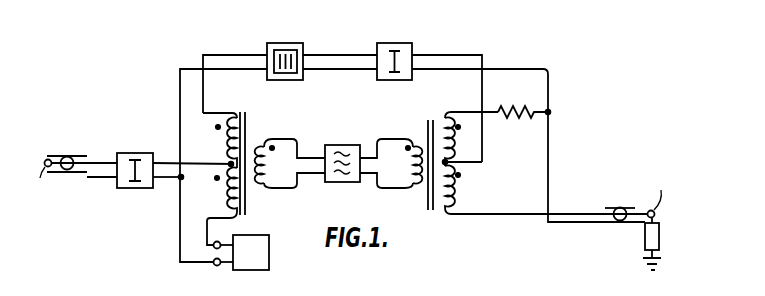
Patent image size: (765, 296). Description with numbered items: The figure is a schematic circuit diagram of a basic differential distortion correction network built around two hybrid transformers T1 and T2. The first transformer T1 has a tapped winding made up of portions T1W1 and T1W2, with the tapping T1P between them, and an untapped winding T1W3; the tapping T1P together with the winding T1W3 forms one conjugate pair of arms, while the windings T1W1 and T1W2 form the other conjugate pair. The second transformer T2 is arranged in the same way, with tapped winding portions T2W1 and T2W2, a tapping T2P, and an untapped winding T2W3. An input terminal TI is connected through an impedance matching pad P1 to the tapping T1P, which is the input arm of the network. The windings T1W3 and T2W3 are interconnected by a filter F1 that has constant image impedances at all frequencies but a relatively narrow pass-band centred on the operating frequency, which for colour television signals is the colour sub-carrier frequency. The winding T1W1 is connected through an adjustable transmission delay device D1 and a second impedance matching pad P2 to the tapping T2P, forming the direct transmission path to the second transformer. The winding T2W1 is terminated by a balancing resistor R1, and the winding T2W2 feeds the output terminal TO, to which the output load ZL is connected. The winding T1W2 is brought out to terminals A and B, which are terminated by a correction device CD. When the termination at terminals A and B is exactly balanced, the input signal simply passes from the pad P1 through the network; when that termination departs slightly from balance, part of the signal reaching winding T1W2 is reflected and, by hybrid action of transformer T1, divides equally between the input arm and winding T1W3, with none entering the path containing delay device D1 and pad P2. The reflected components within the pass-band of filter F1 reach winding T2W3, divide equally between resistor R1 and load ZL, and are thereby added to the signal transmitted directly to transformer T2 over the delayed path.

The adjustable transmission delay device D1 is at (266, 46).
The impedance matching pad P2 is at (380, 46).
The impedance matching pad P1 is at (120, 150).
The filter F1 is at (332, 143).
The hybrid transformer T1 is at (252, 135).
The winding T1W1 is at (240, 97).
The tapping T1P is at (229, 163).
The winding T1W2 is at (220, 188).
The untapped winding T1W3 is at (268, 168).
The untapped winding T2W3 is at (408, 167).
The hybrid transformer T2 is at (424, 131).
The winding T2W1 is at (456, 141).
The tapping T2P is at (452, 164).
The winding T2W2 is at (456, 196).
The balancing resistor R1 is at (528, 90).
The input terminal TI is at (78, 181).
The output terminal TO is at (633, 195).
The output load ZL is at (645, 238).
The terminal A is at (213, 247).
The terminal B is at (213, 264).
The correction device CD is at (251, 252).